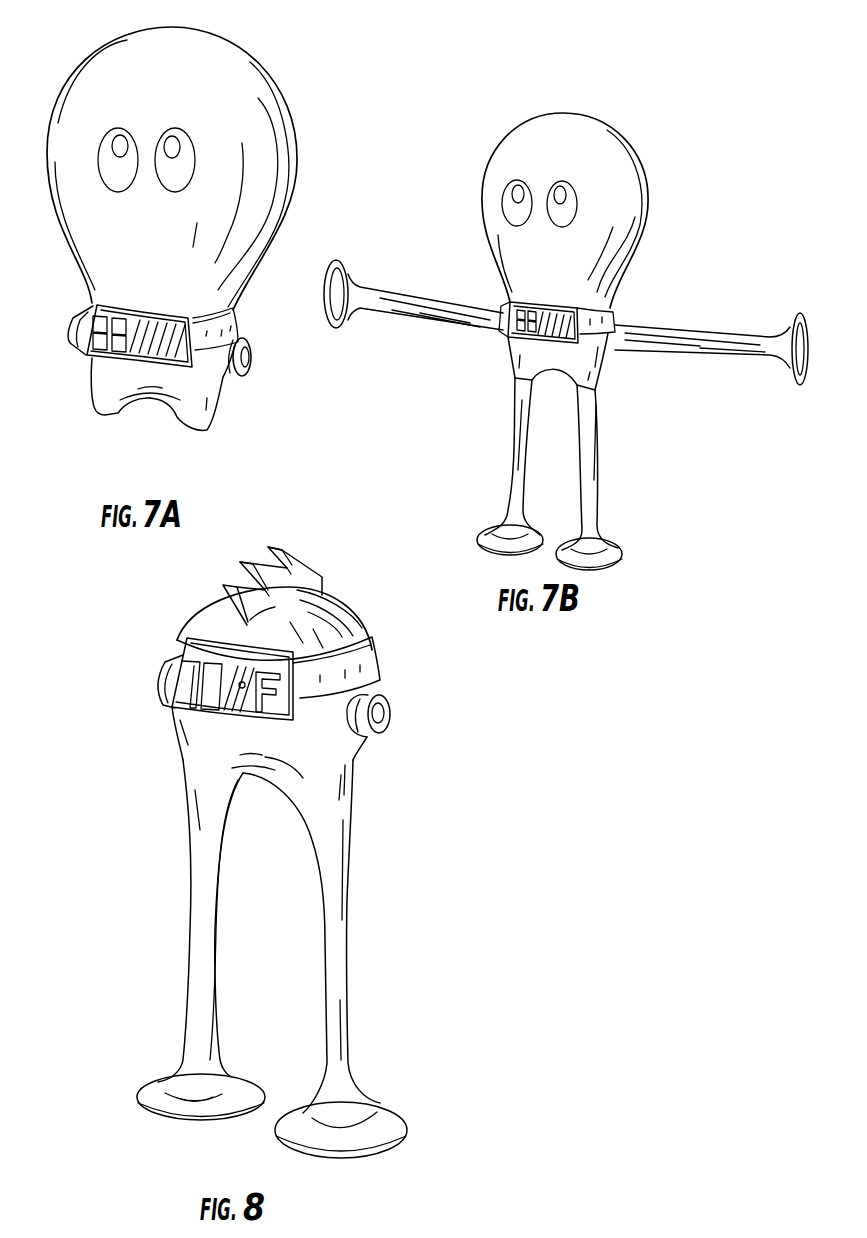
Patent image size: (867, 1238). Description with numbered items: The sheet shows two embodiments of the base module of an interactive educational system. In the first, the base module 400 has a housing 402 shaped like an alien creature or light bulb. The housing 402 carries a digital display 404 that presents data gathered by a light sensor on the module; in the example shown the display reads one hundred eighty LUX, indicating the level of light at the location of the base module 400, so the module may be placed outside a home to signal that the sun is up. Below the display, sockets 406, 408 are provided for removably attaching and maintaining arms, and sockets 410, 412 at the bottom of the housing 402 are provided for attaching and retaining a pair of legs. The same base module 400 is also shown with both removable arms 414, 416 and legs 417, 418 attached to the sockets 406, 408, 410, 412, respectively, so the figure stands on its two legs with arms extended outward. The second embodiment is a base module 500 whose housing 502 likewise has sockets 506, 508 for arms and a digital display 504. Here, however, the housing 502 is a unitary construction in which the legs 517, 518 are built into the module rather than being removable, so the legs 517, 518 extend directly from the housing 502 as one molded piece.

In FIG. 7A, the base module 400 is at (314, 113).
In FIG. 7B, the base module 400 is at (666, 148).
In FIG. 7A, the housing 402 is at (67, 82).
In FIG. 7B, the housing 402 is at (482, 197).
In FIG. 7A, the digital display 404 is at (90, 355).
In FIG. 7B, the digital display 404 is at (503, 338).
In FIG. 7A, the socket 406 is at (70, 333).
In FIG. 7A, the socket 408 is at (252, 357).
In FIG. 7A, the socket 410 is at (110, 418).
In FIG. 7A, the socket 412 is at (200, 434).
In FIG. 7B, the removable arm 414 is at (445, 300).
In FIG. 7B, the removable arm 416 is at (718, 334).
In FIG. 7B, the leg 417 is at (502, 470).
In FIG. 7B, the leg 418 is at (594, 478).
In FIG. 8, the base module 500 is at (363, 583).
In FIG. 8, the housing 502 is at (353, 621).
In FIG. 8, the digital display 504 is at (178, 698).
In FIG. 8, the socket 506 is at (157, 678).
In FIG. 8, the socket 508 is at (384, 716).
In FIG. 8, the leg 517 is at (190, 923).
In FIG. 8, the leg 518 is at (350, 895).